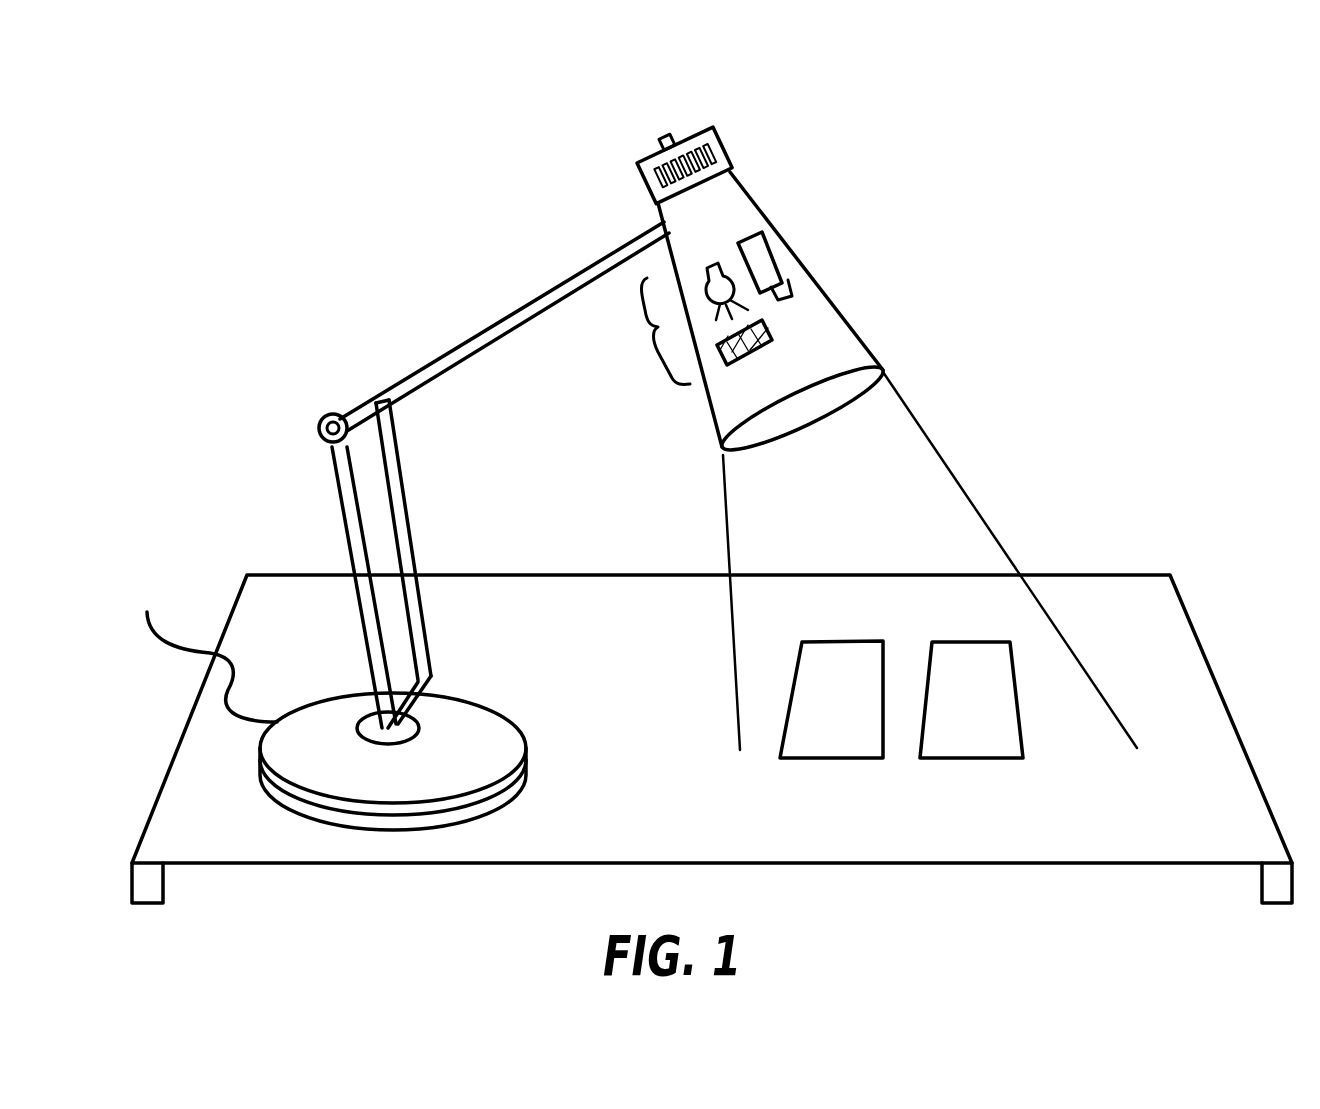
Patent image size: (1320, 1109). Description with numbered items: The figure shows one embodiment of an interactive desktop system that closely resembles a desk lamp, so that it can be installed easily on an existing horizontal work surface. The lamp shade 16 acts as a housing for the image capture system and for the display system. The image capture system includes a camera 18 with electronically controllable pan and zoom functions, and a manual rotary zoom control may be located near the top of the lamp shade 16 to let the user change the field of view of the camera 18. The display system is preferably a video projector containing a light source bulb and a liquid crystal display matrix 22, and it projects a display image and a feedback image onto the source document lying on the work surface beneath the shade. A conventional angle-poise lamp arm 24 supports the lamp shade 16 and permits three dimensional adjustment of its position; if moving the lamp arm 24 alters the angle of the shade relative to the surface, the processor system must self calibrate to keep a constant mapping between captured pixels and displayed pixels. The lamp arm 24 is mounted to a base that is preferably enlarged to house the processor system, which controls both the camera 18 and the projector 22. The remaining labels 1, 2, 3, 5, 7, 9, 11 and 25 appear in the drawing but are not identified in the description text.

The desk lamp 1 is at (440, 306).
The base 2 is at (483, 706).
The lamp head / shade 3 is at (853, 320).
The light bulb 5 is at (715, 268).
The sensor filter 7 is at (757, 358).
The sensor assembly 9 is at (655, 331).
The vent grill cap 11 is at (722, 150).
The lamp shade 16 is at (188, 648).
The camera 18 is at (661, 785).
The liquid crystal display (LCD) matrix 22 is at (765, 262).
The lamp arm 24 is at (979, 641).
The pad 25 is at (856, 641).